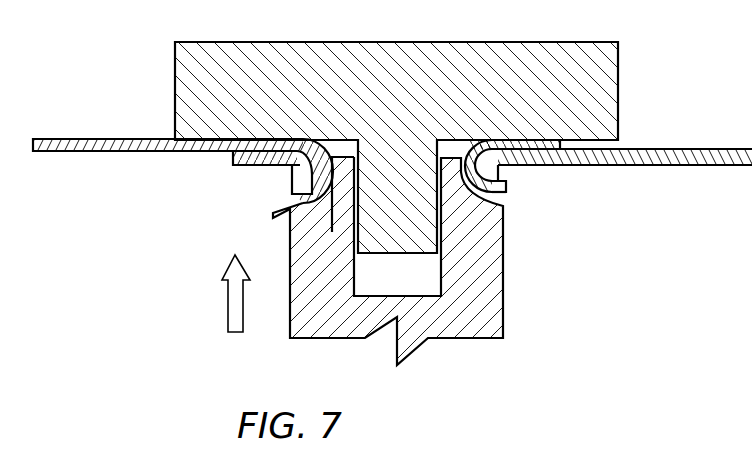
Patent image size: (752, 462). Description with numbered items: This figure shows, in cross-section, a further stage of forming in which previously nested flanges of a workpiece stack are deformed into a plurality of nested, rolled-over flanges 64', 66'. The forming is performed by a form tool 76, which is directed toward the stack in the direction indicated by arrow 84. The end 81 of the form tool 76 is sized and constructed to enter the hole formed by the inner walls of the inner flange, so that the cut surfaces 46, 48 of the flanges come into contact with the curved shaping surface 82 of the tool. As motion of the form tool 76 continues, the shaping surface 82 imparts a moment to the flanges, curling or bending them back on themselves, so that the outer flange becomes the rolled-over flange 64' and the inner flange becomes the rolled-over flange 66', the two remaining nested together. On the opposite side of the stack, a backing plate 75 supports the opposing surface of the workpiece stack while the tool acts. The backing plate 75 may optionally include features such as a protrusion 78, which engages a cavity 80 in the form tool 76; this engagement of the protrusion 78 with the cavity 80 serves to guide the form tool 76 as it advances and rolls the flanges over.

The backing plate 75 is at (618, 98).
The form tool 76 is at (503, 235).
The end of form tool 81 is at (343, 156).
The rolled-over flange 64' is at (391, 138).
The cut surface 46 is at (298, 167).
The cut surface 48 is at (292, 194).
The shaping surface 82 is at (287, 208).
The protrusion 78 is at (466, 143).
The rolled-over flange 66' is at (556, 227).
The cavity 80 is at (438, 278).
The arrow 84 is at (224, 314).